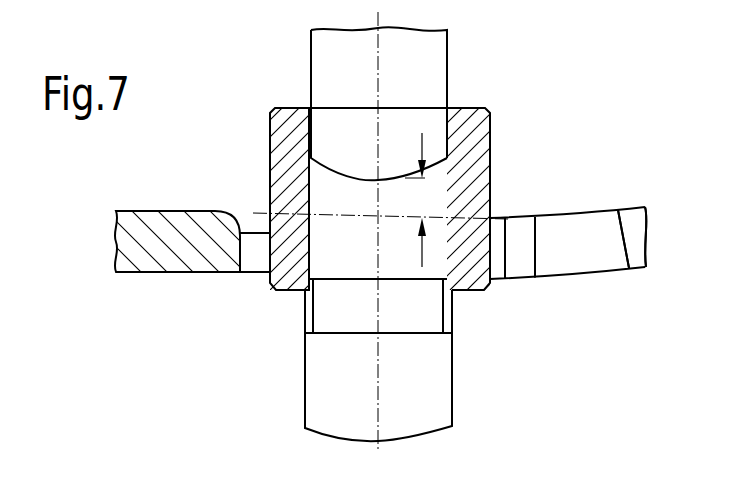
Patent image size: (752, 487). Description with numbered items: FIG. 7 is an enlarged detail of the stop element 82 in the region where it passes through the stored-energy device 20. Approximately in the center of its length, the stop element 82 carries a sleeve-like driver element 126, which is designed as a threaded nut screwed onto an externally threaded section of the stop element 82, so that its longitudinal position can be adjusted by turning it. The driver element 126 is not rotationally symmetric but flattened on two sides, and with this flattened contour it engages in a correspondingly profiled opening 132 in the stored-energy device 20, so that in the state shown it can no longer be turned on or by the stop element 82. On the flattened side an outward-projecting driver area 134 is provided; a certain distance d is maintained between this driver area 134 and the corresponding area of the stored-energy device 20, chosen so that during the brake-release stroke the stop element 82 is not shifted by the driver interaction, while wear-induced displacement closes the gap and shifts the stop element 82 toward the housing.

The driver element 126 is at (468, 108).
The opening 132 is at (495, 233).
The stored-energy device 20 is at (595, 212).
The driver area 134 is at (352, 176).
The stop element 82 is at (452, 385).
The distance d is at (422, 265).